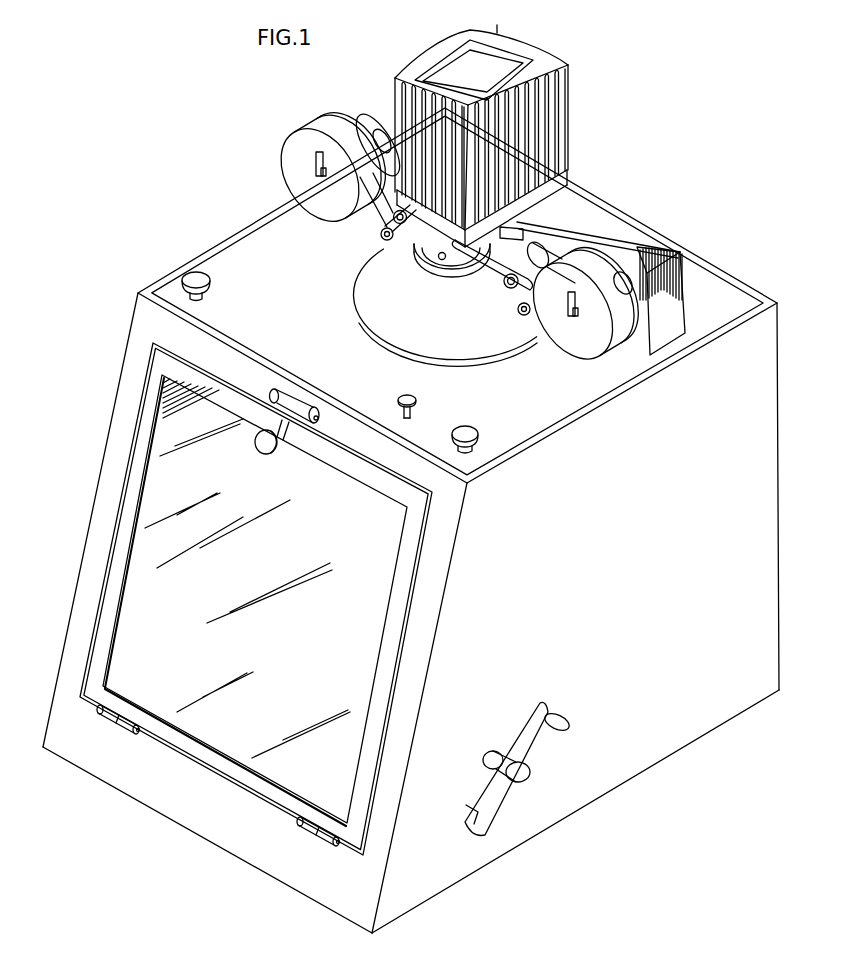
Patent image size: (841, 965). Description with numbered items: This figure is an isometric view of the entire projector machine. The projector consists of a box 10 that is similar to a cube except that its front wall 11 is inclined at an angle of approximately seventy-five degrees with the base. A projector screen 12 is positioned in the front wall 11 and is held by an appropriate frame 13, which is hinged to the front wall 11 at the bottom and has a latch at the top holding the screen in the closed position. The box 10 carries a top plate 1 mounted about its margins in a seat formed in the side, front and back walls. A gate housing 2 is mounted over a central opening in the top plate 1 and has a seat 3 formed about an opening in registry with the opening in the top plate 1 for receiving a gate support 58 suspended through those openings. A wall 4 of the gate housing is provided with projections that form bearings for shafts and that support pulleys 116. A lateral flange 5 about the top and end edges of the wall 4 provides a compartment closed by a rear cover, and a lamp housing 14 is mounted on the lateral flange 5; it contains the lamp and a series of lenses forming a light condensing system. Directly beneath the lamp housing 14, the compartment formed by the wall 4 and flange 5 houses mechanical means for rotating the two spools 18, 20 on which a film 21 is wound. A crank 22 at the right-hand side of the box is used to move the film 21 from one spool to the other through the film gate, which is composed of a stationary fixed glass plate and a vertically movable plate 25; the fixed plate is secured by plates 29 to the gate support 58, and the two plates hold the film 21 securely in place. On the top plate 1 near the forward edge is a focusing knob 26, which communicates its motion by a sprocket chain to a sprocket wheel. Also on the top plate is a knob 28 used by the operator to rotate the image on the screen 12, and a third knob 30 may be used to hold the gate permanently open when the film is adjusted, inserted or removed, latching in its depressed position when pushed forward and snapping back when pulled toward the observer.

The top plate 1 is at (562, 407).
The gate housing 2 is at (370, 302).
The seat 3 is at (460, 273).
The wall 4 is at (590, 247).
The lateral flange 5 is at (625, 230).
The box 10 is at (690, 740).
The front wall 11 is at (420, 658).
The projector screen 12 is at (323, 783).
The frame 13 is at (237, 773).
The lamp housing 14 is at (570, 68).
The spool 18 is at (335, 123).
The spool 20 is at (595, 345).
The film 21 is at (497, 263).
The crank 22 is at (488, 798).
The vertically movable plate 25 is at (437, 236).
The focusing knob 26 is at (210, 279).
The knob 28 is at (478, 432).
The plates 29 is at (517, 220).
The knob 30 is at (417, 398).
The gate support 58 is at (441, 260).
The pulleys 116 is at (401, 236).